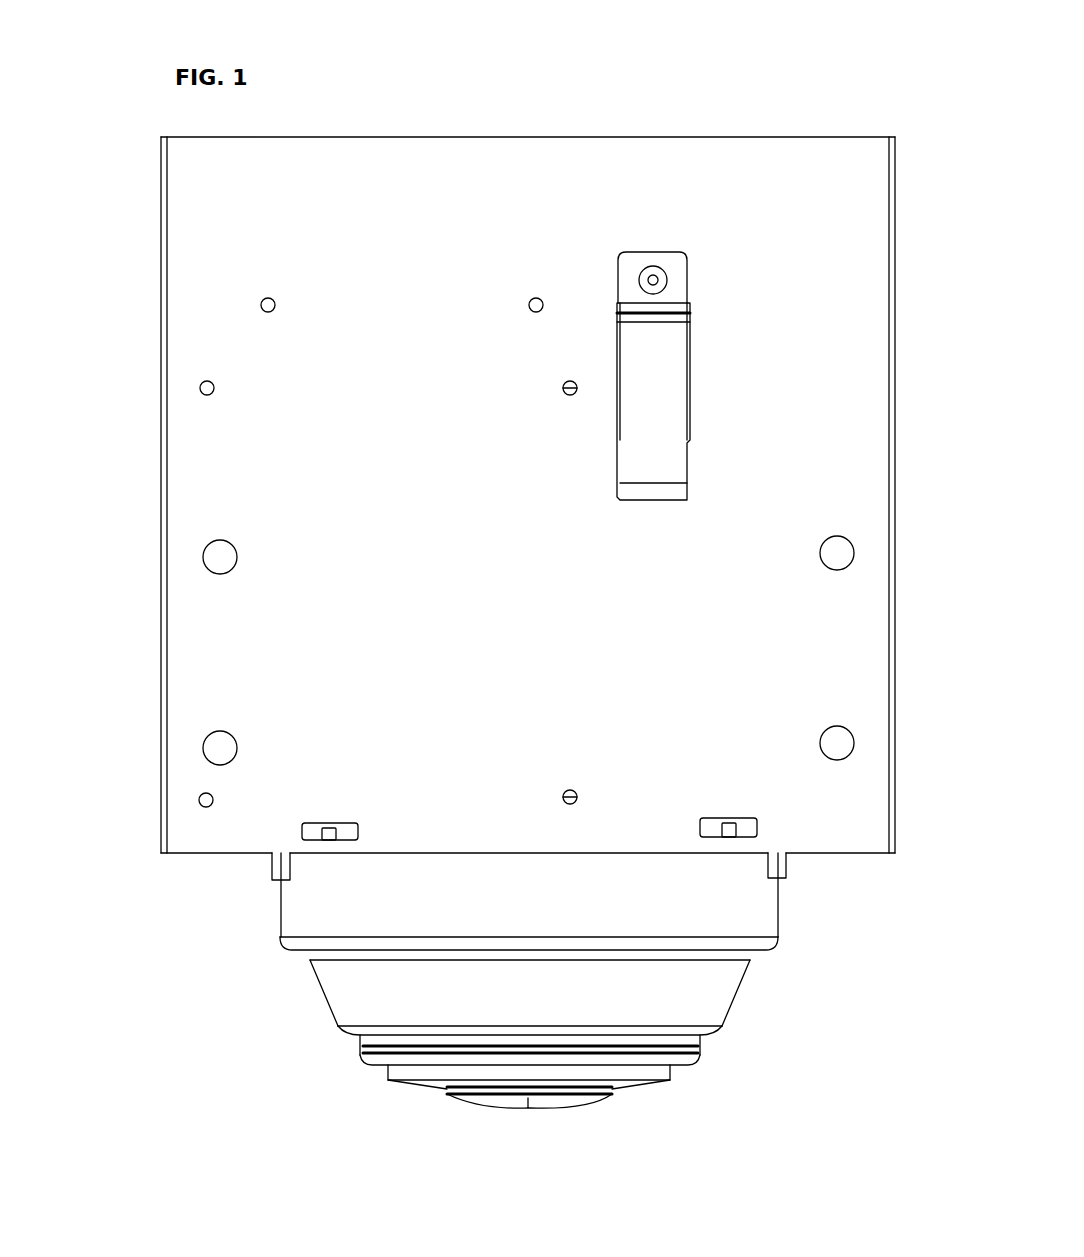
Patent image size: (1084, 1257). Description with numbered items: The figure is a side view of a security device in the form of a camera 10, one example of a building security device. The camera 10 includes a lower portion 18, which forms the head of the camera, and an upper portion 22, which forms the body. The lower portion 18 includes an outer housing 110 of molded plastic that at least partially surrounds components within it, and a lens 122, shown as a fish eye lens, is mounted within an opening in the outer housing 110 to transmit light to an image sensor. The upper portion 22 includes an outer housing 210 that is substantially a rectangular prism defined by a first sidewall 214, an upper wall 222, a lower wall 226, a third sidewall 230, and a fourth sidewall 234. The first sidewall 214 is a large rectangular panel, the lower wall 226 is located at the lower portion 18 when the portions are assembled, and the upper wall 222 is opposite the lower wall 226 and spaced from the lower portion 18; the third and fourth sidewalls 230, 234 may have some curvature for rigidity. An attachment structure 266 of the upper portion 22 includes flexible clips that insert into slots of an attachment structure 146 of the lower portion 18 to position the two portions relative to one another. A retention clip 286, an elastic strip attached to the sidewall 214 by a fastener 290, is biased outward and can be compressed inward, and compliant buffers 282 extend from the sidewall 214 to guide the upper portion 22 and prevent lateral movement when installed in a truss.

The camera 10 is at (458, 84).
The lower portion 18 is at (277, 1013).
The upper portion 22 is at (98, 670).
The outer housing 110 is at (555, 1051).
The lens 122 is at (553, 1108).
The attachment structure 146 is at (786, 866).
The outer housing 210 is at (741, 170).
The first sidewall 214 is at (212, 228).
The upper wall 222 is at (806, 128).
The lower wall 226 is at (204, 862).
The third sidewall 230 is at (898, 413).
The fourth sidewall 234 is at (154, 506).
The attachment structure 266 is at (270, 870).
The compliant buffers 282 is at (208, 572).
The retention clip 286 is at (673, 343).
The fastener 290 is at (662, 272).